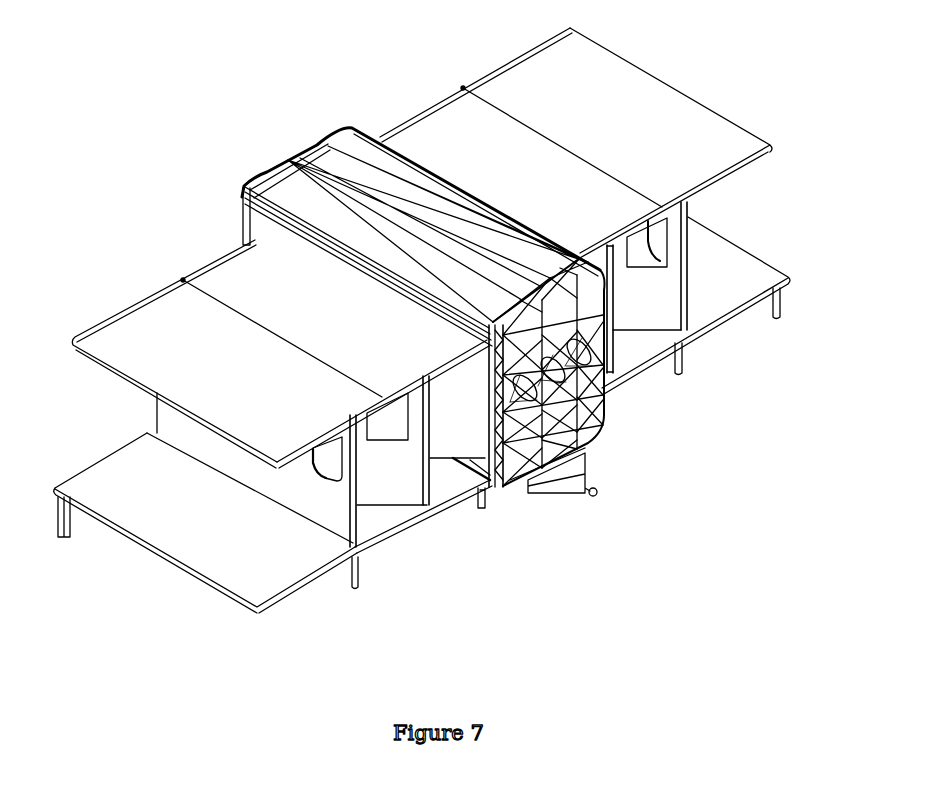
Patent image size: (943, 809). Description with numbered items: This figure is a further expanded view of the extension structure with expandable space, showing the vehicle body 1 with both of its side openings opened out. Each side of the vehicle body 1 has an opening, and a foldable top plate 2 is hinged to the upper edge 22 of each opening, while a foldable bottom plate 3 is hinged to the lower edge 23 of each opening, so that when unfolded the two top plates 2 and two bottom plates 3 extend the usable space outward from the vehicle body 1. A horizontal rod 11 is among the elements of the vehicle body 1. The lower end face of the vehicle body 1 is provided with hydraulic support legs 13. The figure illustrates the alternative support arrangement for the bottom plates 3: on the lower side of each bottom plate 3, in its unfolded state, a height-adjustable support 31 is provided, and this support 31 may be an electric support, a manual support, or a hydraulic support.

The vehicle body 1 is at (318, 156).
The top plate 2 is at (448, 128).
The bottom plate 3 is at (280, 560).
The support 31 is at (247, 623).
The hydraulic support leg 13 is at (483, 509).
The upper edge 22 is at (481, 345).
The lower edge 23 is at (475, 470).
The horizontal rod 11 is at (417, 374).